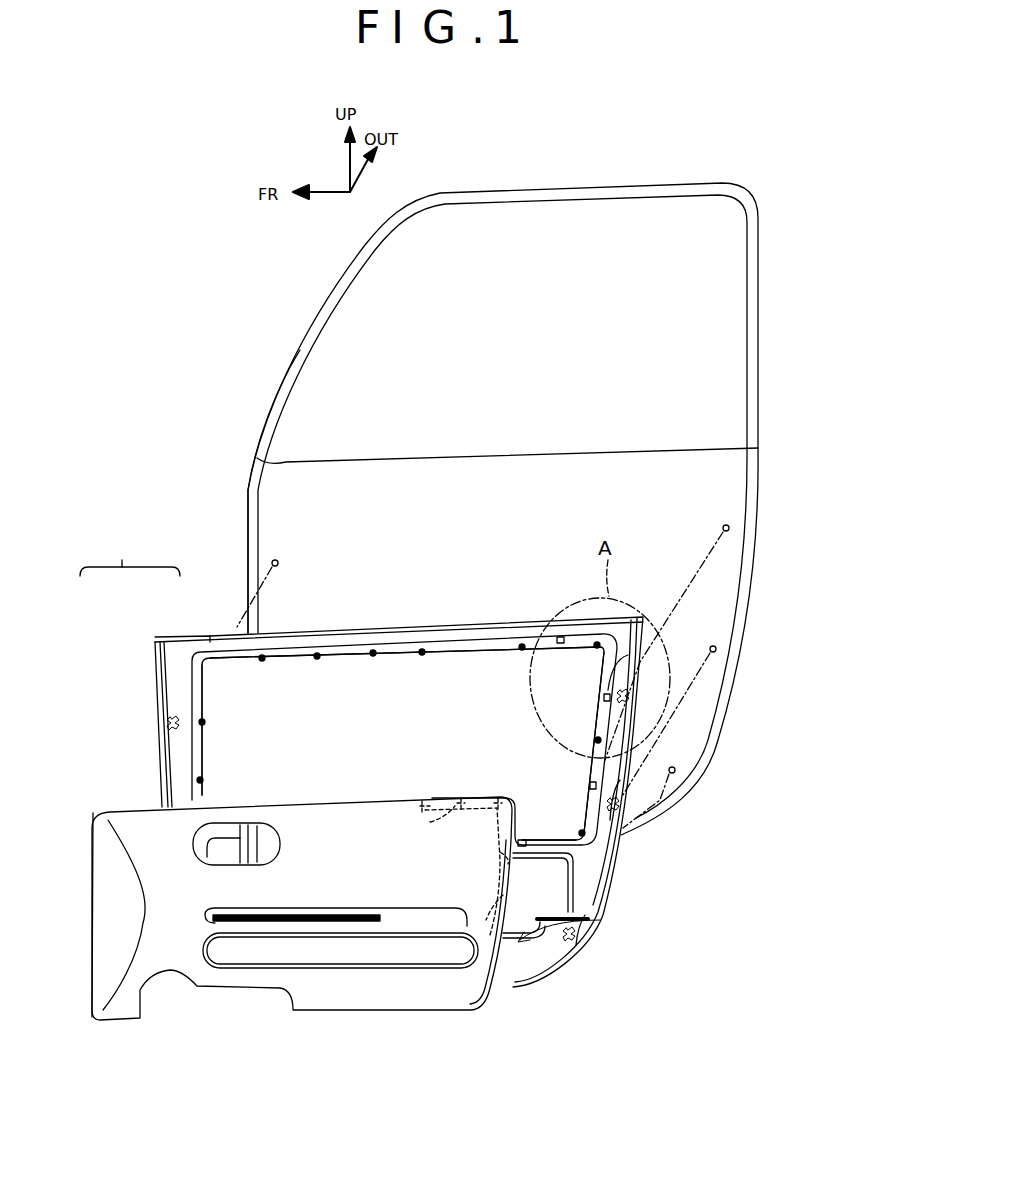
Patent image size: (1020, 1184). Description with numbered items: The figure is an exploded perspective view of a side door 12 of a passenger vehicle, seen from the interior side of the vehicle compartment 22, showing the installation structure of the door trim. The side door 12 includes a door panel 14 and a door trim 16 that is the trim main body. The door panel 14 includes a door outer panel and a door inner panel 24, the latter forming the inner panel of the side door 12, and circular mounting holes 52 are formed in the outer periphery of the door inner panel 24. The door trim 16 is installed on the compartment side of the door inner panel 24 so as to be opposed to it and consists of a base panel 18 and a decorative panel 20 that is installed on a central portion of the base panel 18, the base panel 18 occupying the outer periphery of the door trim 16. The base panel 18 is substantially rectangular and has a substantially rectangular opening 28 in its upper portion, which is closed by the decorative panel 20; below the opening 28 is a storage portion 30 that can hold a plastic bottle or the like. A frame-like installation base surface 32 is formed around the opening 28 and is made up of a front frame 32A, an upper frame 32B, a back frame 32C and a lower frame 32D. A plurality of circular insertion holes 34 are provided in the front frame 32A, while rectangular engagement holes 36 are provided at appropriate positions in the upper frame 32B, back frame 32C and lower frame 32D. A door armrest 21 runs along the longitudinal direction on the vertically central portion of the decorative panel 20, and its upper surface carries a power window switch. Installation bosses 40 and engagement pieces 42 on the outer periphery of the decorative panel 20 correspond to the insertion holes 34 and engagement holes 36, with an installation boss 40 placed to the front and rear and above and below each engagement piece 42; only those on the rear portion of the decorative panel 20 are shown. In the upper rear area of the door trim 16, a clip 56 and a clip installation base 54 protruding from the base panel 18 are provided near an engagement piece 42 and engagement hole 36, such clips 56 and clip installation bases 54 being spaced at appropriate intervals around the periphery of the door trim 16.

The side door 12 is at (190, 262).
The door panel 14 is at (230, 466).
The door inner panel 24 is at (233, 520).
The door trim 16 is at (130, 556).
The base panel 18 is at (152, 662).
The decorative panel 20 is at (112, 803).
The vehicle compartment 22 is at (316, 1055).
The door armrest 21 is at (413, 945).
The opening 28 is at (463, 606).
The storage portion 30 is at (605, 905).
The installation base surface 32 is at (403, 664).
The front frame 32A is at (205, 698).
The upper frame 32B is at (393, 632).
The back frame 32C is at (595, 718).
The lower frame 32D is at (552, 838).
The insertion holes 34 is at (522, 644).
The engagement holes 36 is at (557, 640).
The installation bosses 40 is at (420, 810).
The engagement pieces 42 is at (440, 826).
The mounting holes 52 is at (276, 560).
The clip installation base 54 is at (630, 692).
The clip 56 is at (628, 700).